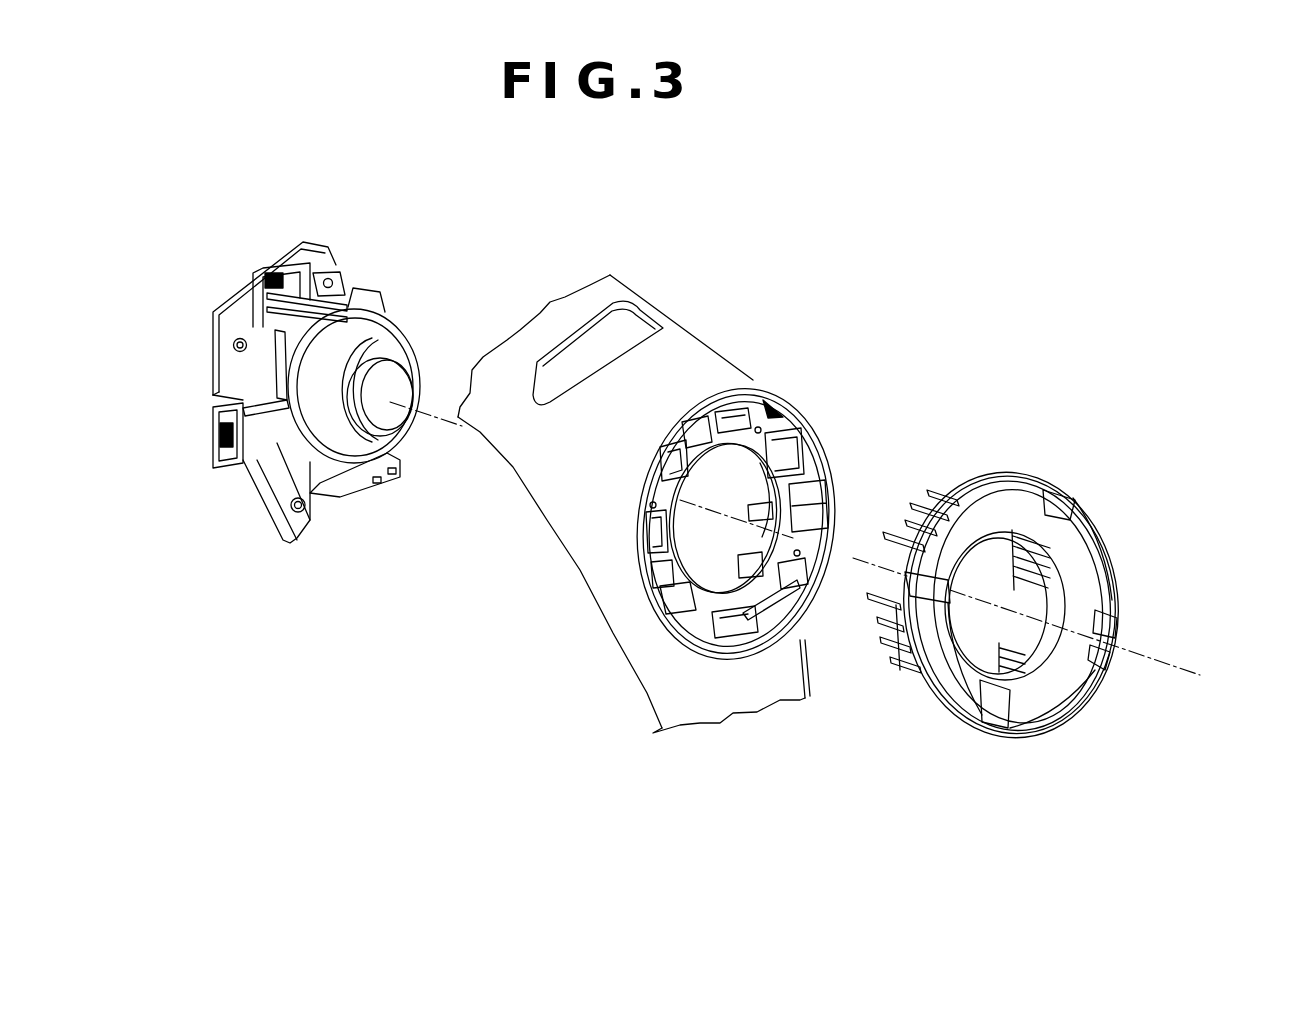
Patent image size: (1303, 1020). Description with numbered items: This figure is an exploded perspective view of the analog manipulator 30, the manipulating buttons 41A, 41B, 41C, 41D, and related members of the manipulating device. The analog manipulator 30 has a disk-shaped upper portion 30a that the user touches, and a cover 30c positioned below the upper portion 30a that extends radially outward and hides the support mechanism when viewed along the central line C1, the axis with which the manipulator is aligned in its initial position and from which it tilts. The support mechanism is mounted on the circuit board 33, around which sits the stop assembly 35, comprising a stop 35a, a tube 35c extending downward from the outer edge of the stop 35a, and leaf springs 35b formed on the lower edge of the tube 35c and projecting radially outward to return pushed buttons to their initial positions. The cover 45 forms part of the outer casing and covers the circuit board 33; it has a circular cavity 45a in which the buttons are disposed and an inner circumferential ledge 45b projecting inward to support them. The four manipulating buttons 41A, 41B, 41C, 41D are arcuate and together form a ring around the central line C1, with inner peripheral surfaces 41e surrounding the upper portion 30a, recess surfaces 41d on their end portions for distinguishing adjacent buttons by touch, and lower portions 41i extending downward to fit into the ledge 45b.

The analog manipulator 30 is at (398, 443).
The upper portion 30a is at (395, 415).
The cover 30c is at (358, 434).
The circuit board 33 is at (302, 242).
The stop assembly 35 is at (340, 278).
The stop 35a is at (398, 450).
The springs 35b is at (200, 487).
The tube 35c is at (222, 358).
The cover 45 is at (686, 347).
The circular cavity 45a is at (765, 408).
The inner circumferential ledge 45b is at (752, 395).
The manipulating button 41A is at (1005, 482).
The manipulating button 41B is at (1103, 535).
The manipulating button 41C is at (1045, 722).
The manipulating button 41D is at (960, 712).
The recess surfaces 41d is at (1105, 622).
The inner peripheral surfaces 41e is at (1097, 580).
The lower portion 41i is at (925, 500).
The central line C1 is at (816, 549).